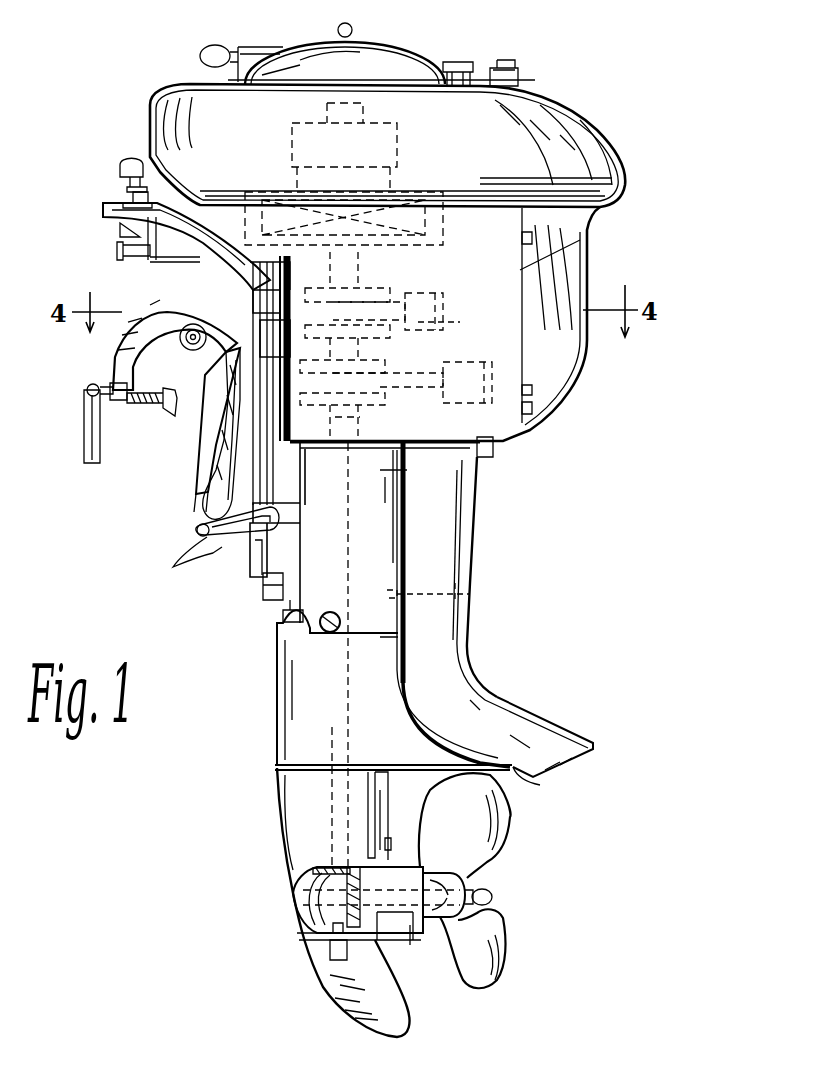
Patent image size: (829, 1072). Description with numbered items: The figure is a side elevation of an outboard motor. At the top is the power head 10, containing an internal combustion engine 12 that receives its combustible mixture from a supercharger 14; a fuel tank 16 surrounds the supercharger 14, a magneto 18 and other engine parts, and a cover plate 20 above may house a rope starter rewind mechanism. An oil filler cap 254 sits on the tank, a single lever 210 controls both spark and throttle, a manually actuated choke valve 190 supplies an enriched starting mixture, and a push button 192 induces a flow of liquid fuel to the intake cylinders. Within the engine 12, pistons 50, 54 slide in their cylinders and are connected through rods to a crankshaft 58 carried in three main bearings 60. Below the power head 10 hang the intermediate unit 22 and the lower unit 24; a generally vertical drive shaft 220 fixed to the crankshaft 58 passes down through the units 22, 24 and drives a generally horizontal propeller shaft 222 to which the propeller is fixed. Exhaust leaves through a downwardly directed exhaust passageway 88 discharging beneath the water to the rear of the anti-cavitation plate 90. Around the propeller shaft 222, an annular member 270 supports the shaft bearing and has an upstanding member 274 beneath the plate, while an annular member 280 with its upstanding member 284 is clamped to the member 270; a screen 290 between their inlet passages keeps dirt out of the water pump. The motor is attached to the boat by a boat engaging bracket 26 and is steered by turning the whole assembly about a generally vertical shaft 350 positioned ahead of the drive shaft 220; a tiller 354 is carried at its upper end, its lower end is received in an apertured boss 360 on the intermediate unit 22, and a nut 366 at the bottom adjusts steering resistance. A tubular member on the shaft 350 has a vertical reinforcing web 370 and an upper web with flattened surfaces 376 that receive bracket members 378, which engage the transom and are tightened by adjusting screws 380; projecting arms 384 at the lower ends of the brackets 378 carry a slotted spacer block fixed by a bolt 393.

The power head 10 is at (515, 279).
The internal combustion engine 12 is at (494, 330).
The supercharger 14 is at (440, 324).
The fuel tank 16 is at (554, 150).
The magneto 18 is at (400, 148).
The cover plate 20 is at (377, 60).
The intermediate unit 22 is at (380, 537).
The lower unit 24 is at (302, 690).
The boat engaging bracket 26 is at (198, 440).
The piston 50 is at (440, 291).
The piston 54 is at (477, 400).
The crankshaft 58 is at (398, 290).
The main bearings 60 is at (362, 276).
The exhaust passageway 88 is at (448, 632).
The anti-cavitation plate 90 is at (510, 772).
The choke valve 190 is at (118, 253).
The push button 192 is at (130, 197).
The lever 210 is at (131, 158).
The drive shaft 220 is at (330, 727).
The propeller shaft 222 is at (466, 878).
The cap 254 is at (465, 63).
The annular member 270 is at (378, 915).
The upstanding member 274 is at (375, 801).
The annular shaped member 280 is at (413, 915).
The upstanding member 284 is at (403, 815).
The screen 290 is at (387, 842).
The steering shaft 350 is at (258, 305).
The tiller 354 is at (103, 223).
The apertured boss 360 is at (264, 583).
The nut 366 is at (283, 615).
The reinforcing web 370 is at (243, 440).
The flattened surfaces 376 is at (193, 323).
The bracket members 378 is at (190, 510).
The adjusting screws 380 is at (145, 410).
The projecting arms 384 is at (240, 540).
The bolt 393 is at (175, 557).